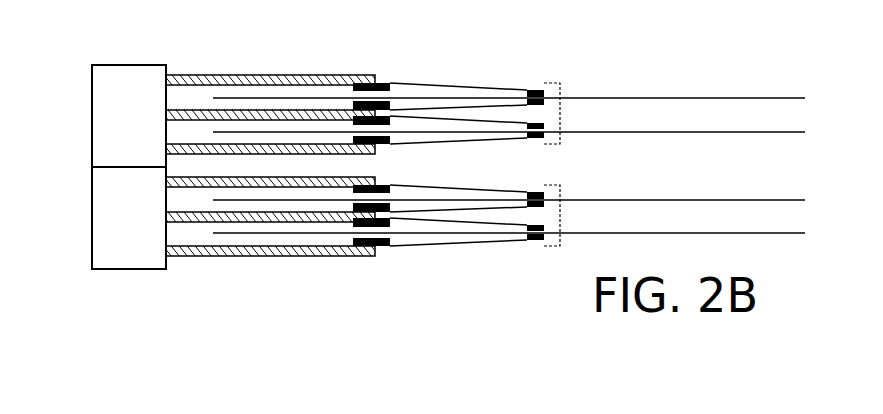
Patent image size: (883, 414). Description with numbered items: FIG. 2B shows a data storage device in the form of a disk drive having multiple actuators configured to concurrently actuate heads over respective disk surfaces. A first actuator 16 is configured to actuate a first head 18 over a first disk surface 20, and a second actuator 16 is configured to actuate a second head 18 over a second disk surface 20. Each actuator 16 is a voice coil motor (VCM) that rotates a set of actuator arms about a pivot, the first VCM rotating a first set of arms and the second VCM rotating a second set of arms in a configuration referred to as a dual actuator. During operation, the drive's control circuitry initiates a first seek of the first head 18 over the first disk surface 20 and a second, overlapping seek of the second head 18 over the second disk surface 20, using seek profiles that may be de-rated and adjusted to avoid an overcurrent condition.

The actuator 16 is at (92, 175).
The head 18 is at (532, 186).
The disk surface 20 is at (795, 93).